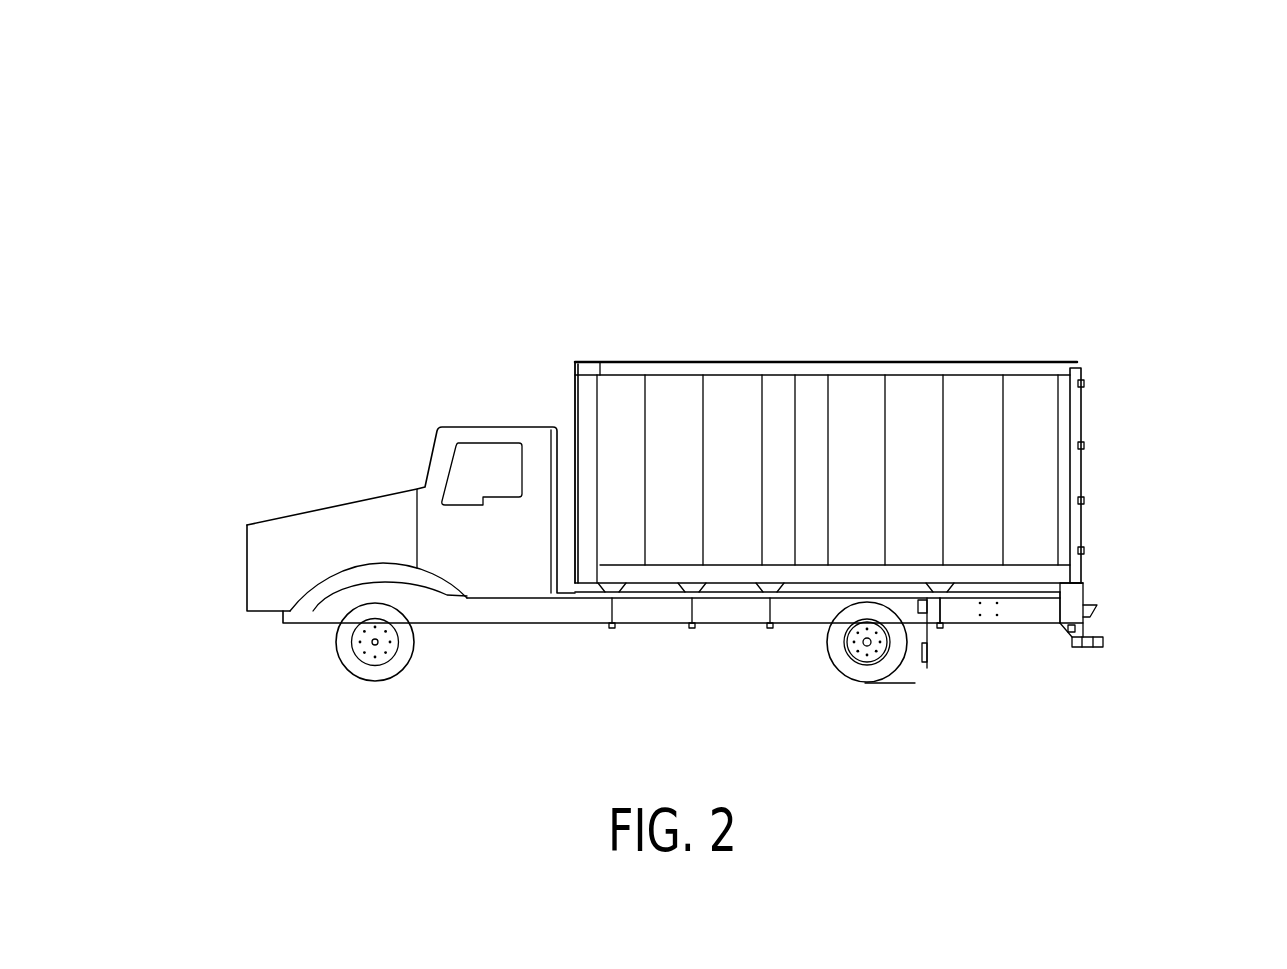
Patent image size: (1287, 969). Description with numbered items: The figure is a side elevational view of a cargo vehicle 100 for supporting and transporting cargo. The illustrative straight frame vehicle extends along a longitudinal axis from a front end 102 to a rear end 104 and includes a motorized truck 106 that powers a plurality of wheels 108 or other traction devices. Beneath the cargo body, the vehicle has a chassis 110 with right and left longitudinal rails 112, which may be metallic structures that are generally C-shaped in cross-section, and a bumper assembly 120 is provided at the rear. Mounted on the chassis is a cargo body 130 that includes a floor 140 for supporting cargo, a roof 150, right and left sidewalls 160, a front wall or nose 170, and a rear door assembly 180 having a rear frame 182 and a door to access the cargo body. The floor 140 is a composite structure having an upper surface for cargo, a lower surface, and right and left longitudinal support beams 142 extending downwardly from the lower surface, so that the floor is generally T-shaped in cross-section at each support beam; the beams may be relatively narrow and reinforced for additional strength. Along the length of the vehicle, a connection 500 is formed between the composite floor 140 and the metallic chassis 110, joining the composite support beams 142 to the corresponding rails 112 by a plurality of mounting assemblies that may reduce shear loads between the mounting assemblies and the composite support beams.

The cargo vehicle 100 is at (978, 123).
The front end 102 is at (153, 585).
The rear end 104 is at (1175, 448).
The motorized truck 106 is at (353, 518).
The wheels 108 is at (383, 674).
The chassis 110 is at (512, 612).
The longitudinal rails 112 is at (578, 610).
The bumper assembly 120 is at (1050, 665).
The cargo body 130 is at (760, 343).
The floor 140 is at (740, 585).
The longitudinal support beams 142 is at (803, 587).
The roof 150 is at (918, 361).
The sidewalls 160 is at (663, 388).
The front wall 170 is at (575, 413).
The rear door assembly 180 is at (1105, 397).
The rear frame 182 is at (1082, 522).
The connection 500 is at (677, 642).